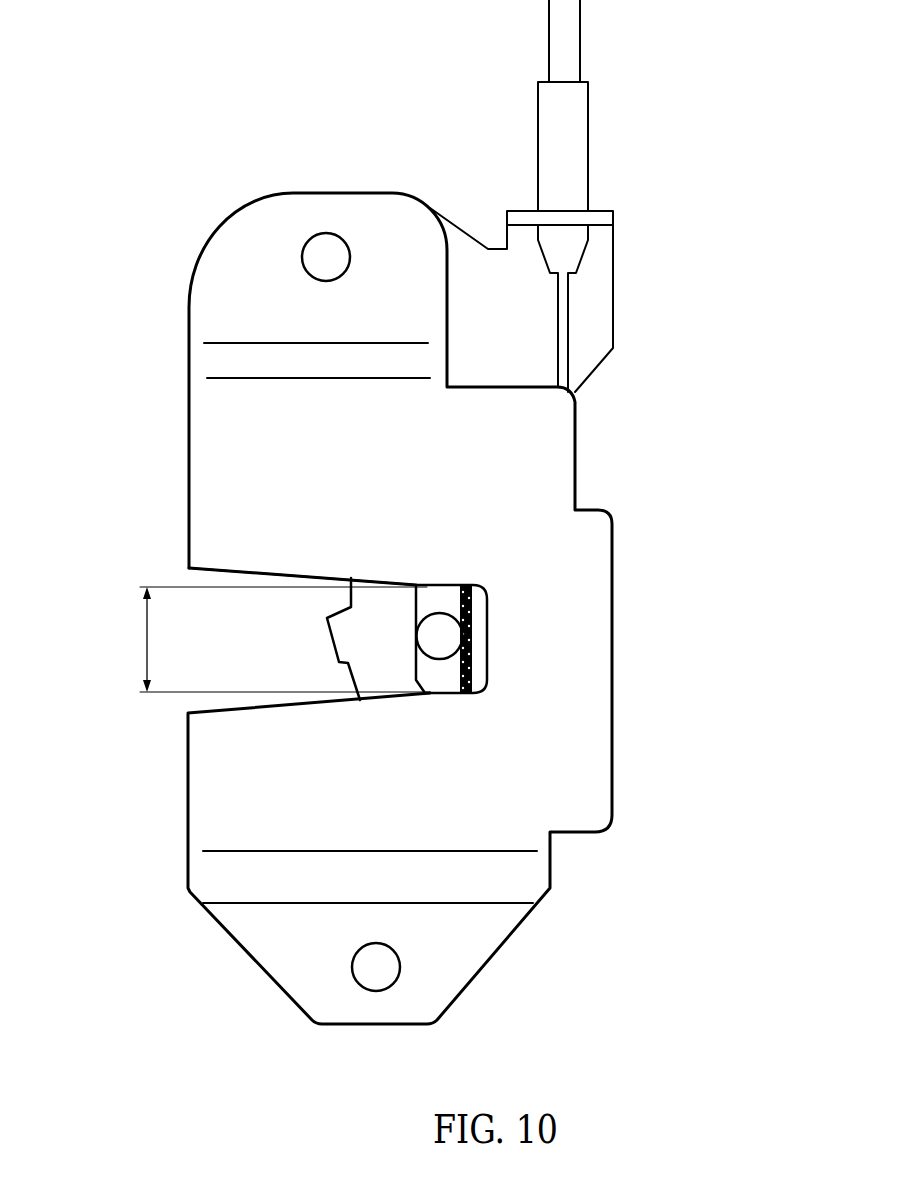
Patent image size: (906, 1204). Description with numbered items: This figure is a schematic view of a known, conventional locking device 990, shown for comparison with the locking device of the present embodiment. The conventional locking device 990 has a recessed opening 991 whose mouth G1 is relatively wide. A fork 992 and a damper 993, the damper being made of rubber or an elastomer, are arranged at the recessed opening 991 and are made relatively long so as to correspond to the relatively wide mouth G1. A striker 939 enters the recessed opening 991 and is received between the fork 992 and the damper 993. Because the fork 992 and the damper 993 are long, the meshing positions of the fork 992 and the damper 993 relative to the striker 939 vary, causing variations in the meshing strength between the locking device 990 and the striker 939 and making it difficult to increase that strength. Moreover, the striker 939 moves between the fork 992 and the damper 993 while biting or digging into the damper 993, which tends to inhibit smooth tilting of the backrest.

The conventional locking device 990 is at (238, 212).
The recessed opening 991 is at (273, 578).
The fork 992 is at (388, 658).
The damper 993 is at (472, 605).
The striker 939 is at (434, 638).
The mouth G1 is at (270, 639).